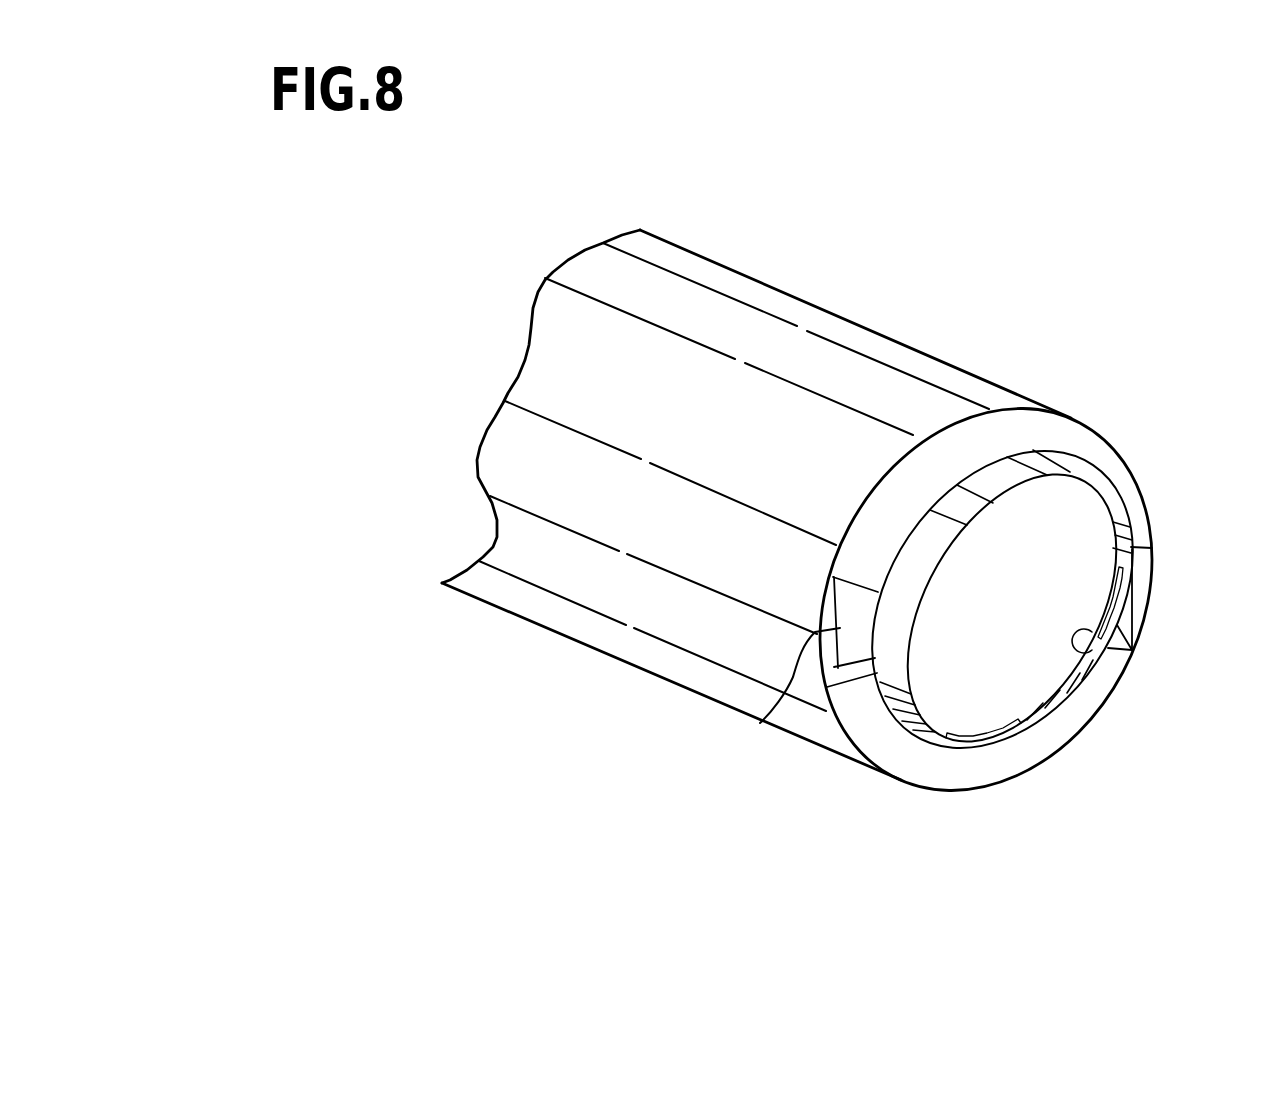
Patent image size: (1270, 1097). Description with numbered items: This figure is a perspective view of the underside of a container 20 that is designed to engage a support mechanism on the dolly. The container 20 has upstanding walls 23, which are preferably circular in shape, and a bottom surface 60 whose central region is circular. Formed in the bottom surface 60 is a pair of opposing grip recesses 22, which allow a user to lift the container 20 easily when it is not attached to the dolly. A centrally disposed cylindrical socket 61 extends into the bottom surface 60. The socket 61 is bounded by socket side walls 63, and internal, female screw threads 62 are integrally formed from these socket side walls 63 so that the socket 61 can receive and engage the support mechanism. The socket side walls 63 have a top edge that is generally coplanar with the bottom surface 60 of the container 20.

The container 20 is at (845, 543).
The grip recesses 22 is at (760, 723).
The upstanding walls 23 is at (558, 595).
The bottom surface 60 is at (1115, 470).
The cylindrical socket 61 is at (973, 698).
The internal screw threads 62 is at (1085, 657).
The socket side walls 63 is at (1050, 717).